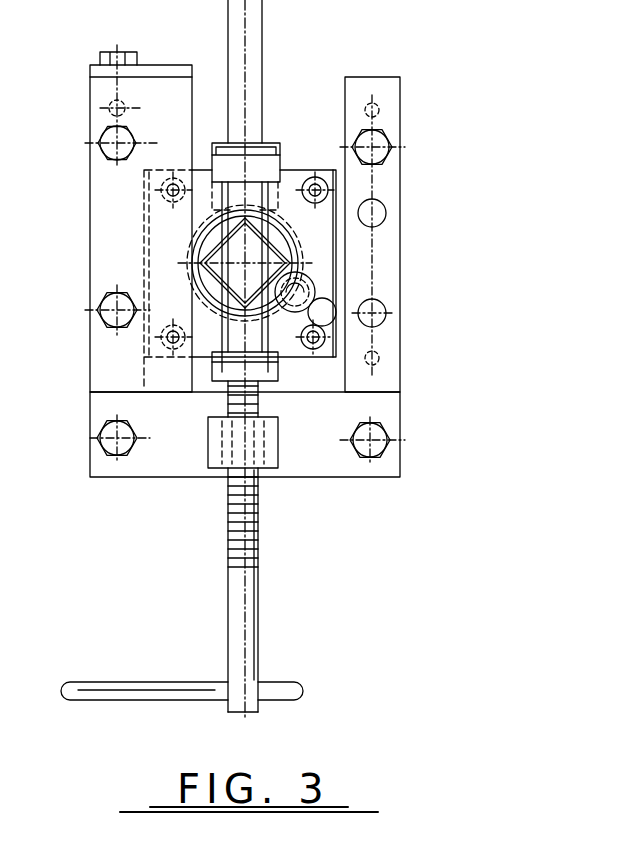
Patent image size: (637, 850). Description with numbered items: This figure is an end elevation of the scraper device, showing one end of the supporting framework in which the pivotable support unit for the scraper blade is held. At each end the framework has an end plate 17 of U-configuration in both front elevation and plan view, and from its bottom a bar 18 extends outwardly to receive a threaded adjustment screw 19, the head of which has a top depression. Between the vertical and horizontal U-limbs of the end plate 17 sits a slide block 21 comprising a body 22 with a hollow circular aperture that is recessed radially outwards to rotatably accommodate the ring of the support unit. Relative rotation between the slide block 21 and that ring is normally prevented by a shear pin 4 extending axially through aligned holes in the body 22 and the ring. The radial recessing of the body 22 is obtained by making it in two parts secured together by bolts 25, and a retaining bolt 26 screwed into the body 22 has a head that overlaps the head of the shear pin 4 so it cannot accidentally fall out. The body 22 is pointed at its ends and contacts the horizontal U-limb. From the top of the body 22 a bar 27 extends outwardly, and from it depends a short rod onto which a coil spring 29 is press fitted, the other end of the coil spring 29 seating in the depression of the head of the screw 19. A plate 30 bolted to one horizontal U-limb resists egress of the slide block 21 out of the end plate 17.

The shear pin 4 is at (315, 289).
The end plate 17 is at (400, 152).
The bar 18 is at (250, 453).
The threaded adjustment screw 19 is at (258, 555).
The slide block 21 is at (293, 168).
The body 22 is at (330, 243).
The bolts 25 is at (317, 192).
The retaining bolt 26 is at (323, 317).
The bar 27 is at (260, 158).
The coil spring 29 is at (195, 307).
The plate 30 is at (163, 82).